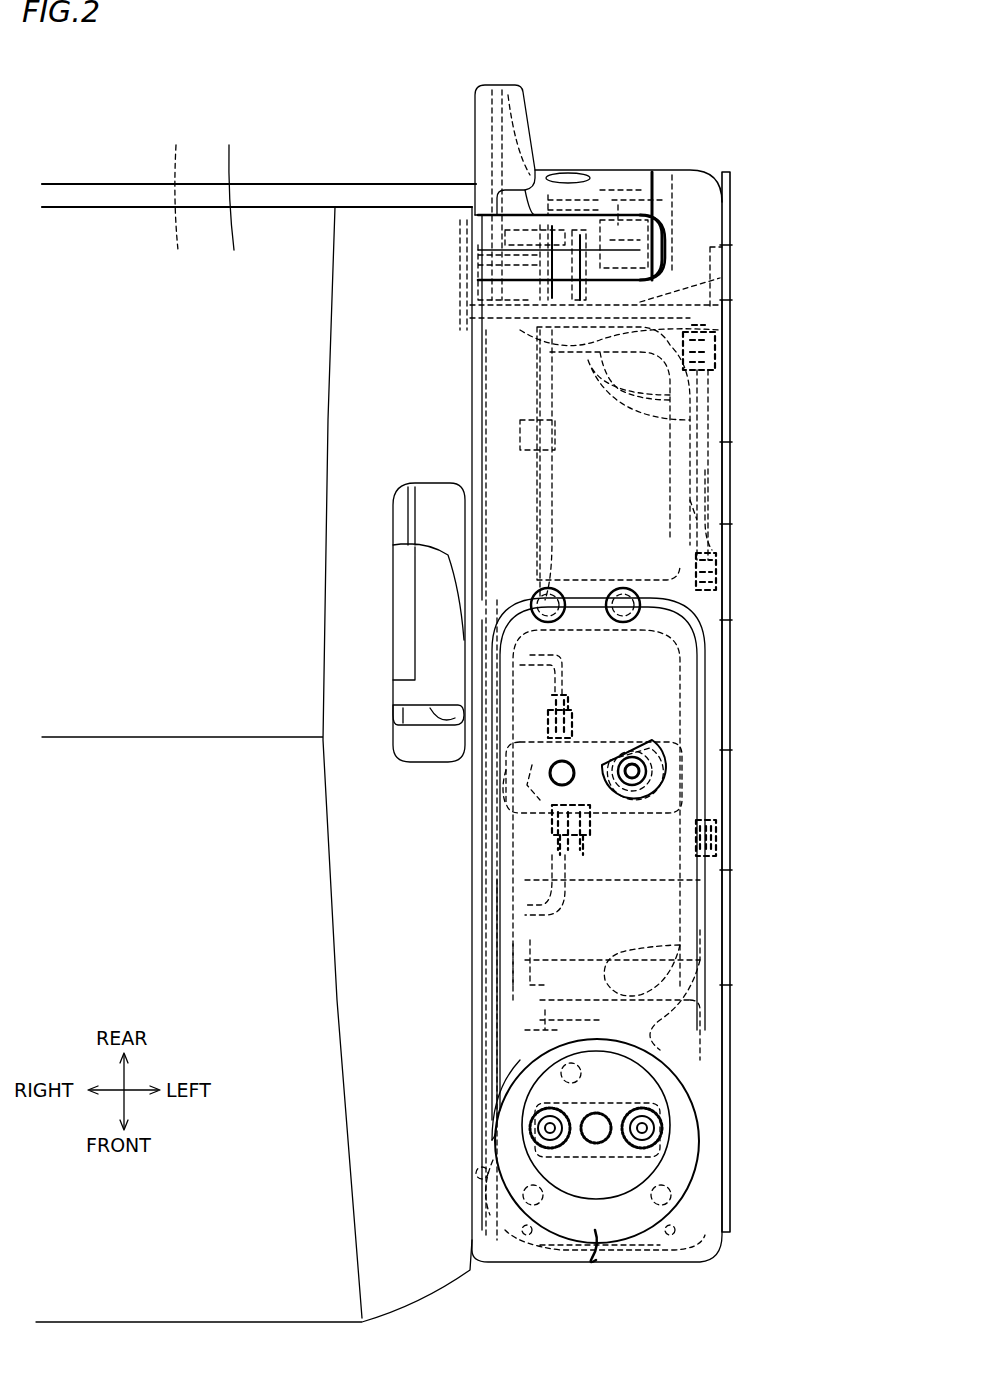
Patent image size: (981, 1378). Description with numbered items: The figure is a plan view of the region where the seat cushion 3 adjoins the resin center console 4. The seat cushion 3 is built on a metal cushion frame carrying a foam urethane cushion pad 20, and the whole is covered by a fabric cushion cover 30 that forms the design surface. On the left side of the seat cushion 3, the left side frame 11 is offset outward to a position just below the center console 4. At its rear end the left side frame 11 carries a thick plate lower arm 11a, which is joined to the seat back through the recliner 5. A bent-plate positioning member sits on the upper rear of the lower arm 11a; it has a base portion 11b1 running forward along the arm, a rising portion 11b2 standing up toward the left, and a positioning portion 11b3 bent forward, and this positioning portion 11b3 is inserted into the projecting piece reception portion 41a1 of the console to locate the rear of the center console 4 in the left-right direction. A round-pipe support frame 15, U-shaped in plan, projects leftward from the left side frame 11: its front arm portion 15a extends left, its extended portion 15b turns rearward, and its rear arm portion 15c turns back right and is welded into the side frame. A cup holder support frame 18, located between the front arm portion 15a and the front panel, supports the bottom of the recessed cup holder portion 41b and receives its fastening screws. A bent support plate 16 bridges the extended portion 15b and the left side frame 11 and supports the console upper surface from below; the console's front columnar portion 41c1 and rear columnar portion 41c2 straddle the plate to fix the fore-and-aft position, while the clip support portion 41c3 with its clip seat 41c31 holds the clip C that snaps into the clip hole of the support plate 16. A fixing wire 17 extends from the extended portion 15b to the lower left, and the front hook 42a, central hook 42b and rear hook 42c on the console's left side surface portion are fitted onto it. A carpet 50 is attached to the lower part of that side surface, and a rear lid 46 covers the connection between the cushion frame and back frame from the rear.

The seat cushion 3 is at (118, 180).
The cushion pad 20 is at (164, 185).
The cushion cover 30 is at (229, 185).
The center console 4 is at (708, 212).
The recliner 5 is at (500, 176).
The left side frame 11 is at (560, 890).
The lower arm 11a is at (492, 125).
The base portion 11b1 is at (512, 115).
The rising portion 11b2 is at (540, 172).
The positioning portion 11b3 is at (500, 278).
The support frame 15 is at (690, 445).
The front arm portion 15a is at (640, 965).
The extended portion 15b is at (702, 616).
The rear arm portion 15c is at (686, 400).
The support plate 16 is at (662, 730).
The fixing wire 17 is at (720, 646).
The cup holder support frame 18 is at (672, 1050).
The projecting piece reception portion 41a1 is at (720, 302).
The cup holder portion 41b is at (660, 1082).
The front columnar portion 41c1 is at (556, 830).
The rear columnar portion 41c2 is at (572, 722).
The clip support portion 41c3 is at (648, 762).
The clip seat 41c31 is at (650, 788).
The front hook 42a is at (716, 838).
The central hook 42b is at (716, 562).
The rear hook 42c is at (712, 340).
The rear lid 46 is at (612, 183).
The carpet 50 is at (732, 1155).
The clip C is at (628, 805).